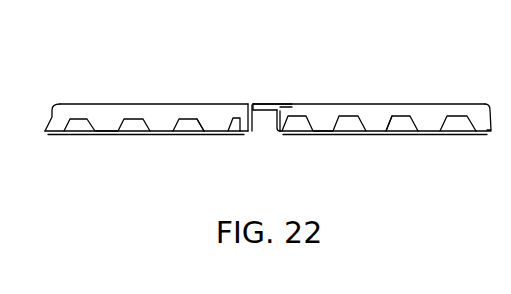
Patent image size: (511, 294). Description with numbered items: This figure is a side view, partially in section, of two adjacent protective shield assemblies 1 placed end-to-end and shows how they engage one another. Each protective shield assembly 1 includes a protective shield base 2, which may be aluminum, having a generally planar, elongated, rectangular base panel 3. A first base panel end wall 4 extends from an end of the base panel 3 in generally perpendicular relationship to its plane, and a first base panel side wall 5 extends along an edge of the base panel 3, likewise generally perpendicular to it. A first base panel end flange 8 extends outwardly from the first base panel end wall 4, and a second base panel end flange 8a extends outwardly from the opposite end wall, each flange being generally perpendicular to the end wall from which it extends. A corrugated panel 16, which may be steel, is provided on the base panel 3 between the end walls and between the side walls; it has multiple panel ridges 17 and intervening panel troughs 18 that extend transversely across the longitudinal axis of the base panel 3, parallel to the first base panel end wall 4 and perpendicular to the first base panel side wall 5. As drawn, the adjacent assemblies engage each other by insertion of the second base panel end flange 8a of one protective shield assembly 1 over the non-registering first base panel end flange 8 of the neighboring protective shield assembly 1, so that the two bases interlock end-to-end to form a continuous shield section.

The protective shield assembly 1 is at (259, 107).
The protective shield base 2 is at (110, 143).
The base panel 3 is at (185, 132).
The first base panel end wall 4 is at (245, 105).
The first base panel side wall 5 is at (124, 104).
The first base panel end flange 8 is at (282, 108).
The second base panel end flange 8a is at (253, 110).
The corrugated panel 16 is at (70, 138).
The panel ridges 17 is at (166, 132).
The panel troughs 18 is at (242, 132).